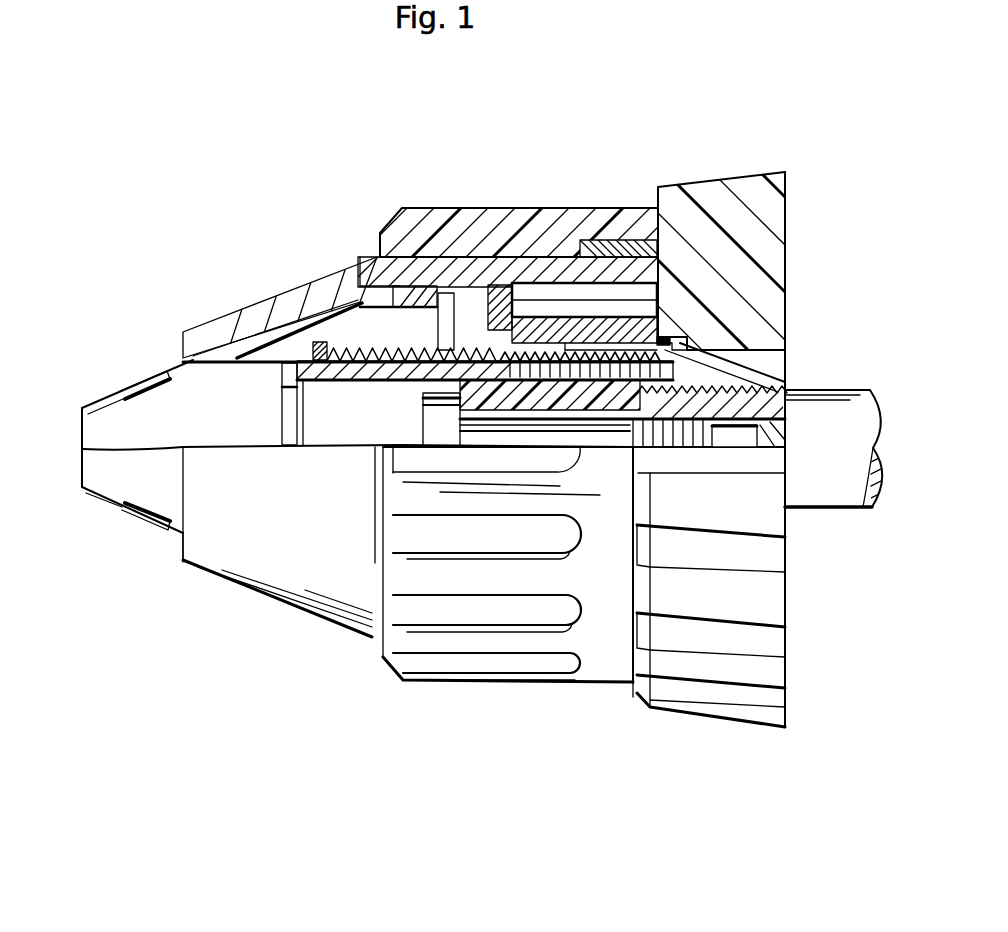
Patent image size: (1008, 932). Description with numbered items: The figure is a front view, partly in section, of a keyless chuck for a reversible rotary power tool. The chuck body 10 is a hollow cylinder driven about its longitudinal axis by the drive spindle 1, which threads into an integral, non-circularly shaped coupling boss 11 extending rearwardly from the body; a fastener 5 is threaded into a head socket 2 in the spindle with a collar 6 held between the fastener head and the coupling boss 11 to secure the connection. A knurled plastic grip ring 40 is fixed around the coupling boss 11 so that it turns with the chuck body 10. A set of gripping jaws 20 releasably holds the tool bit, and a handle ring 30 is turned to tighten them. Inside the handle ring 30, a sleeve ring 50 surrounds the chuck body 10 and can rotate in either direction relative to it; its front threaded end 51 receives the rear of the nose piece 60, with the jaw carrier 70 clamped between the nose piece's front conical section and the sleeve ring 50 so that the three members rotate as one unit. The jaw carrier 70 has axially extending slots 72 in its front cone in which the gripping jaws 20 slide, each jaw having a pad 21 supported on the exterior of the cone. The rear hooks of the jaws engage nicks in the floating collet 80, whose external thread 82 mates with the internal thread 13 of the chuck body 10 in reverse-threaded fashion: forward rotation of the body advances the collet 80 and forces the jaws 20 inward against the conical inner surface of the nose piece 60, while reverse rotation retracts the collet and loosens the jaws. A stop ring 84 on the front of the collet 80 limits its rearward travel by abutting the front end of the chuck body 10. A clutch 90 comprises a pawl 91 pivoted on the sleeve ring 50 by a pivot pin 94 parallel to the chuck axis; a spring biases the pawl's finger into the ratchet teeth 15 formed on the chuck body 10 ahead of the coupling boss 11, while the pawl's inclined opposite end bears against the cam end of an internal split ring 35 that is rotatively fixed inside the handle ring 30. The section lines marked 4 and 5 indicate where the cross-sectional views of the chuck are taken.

The drive spindle 1 is at (868, 390).
The head socket 2 is at (742, 447).
The section line 4- 4 is at (482, 444).
The fastener 5 is at (335, 652).
The collar 6 is at (515, 415).
The chuck body 10 is at (460, 286).
The coupling boss 11 is at (752, 368).
The internal thread 13 is at (585, 374).
The ratchet teeth 15 is at (657, 340).
The gripping jaws 20 is at (82, 407).
The pad 21 is at (147, 380).
The handle ring 30 is at (407, 203).
The internal split ring 35 is at (622, 250).
The grip ring 40 is at (788, 212).
The sleeve ring 50 is at (515, 262).
The front threaded end 51 is at (483, 283).
The nose piece 60 is at (277, 332).
The jaw carrier 70 is at (377, 227).
The axially extending slots 72 is at (285, 325).
The floating collet 80 is at (352, 383).
The external thread 82 is at (390, 350).
The stop ring 84 is at (317, 341).
The clutch 90 is at (662, 317).
The pawl 91 is at (590, 270).
The pivot pin 94 is at (646, 296).